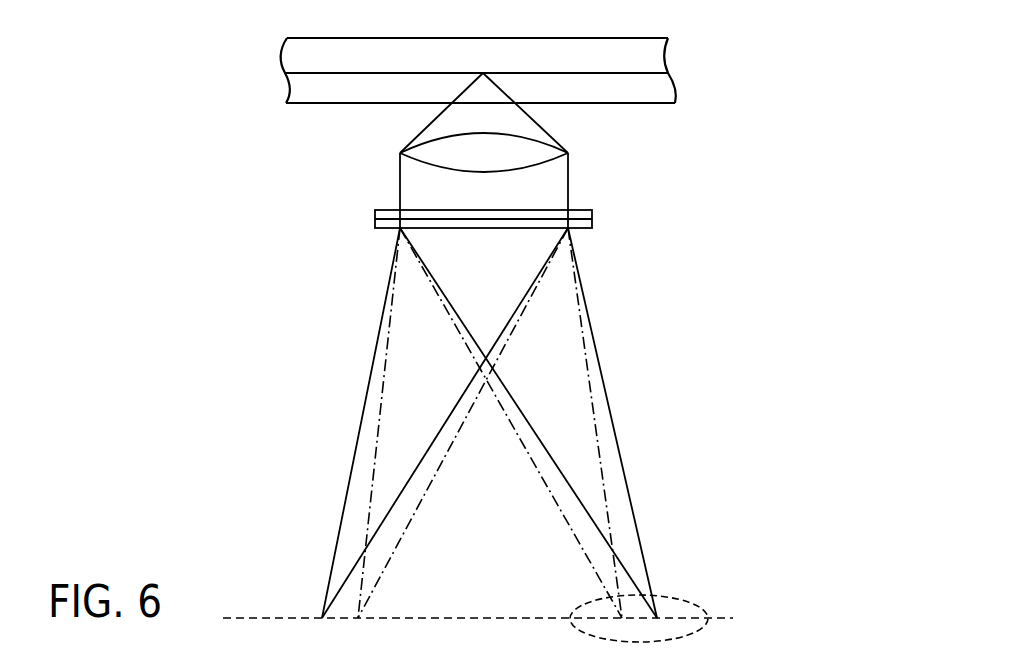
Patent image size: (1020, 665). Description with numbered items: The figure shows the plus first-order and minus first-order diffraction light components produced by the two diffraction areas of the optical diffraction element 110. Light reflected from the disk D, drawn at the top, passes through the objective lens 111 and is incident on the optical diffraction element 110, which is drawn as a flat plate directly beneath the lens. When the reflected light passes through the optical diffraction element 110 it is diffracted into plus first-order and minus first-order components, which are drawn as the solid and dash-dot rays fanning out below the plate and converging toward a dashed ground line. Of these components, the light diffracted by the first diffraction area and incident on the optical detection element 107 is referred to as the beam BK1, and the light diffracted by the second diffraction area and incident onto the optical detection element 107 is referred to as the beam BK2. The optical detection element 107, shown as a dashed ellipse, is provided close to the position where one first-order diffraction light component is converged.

The disk D is at (590, 38).
The objective lens 111 is at (570, 153).
The optical diffraction element 110 is at (593, 214).
The beam BK1 is at (581, 547).
The beam BK2 is at (621, 478).
The optical detection element 107 is at (682, 596).